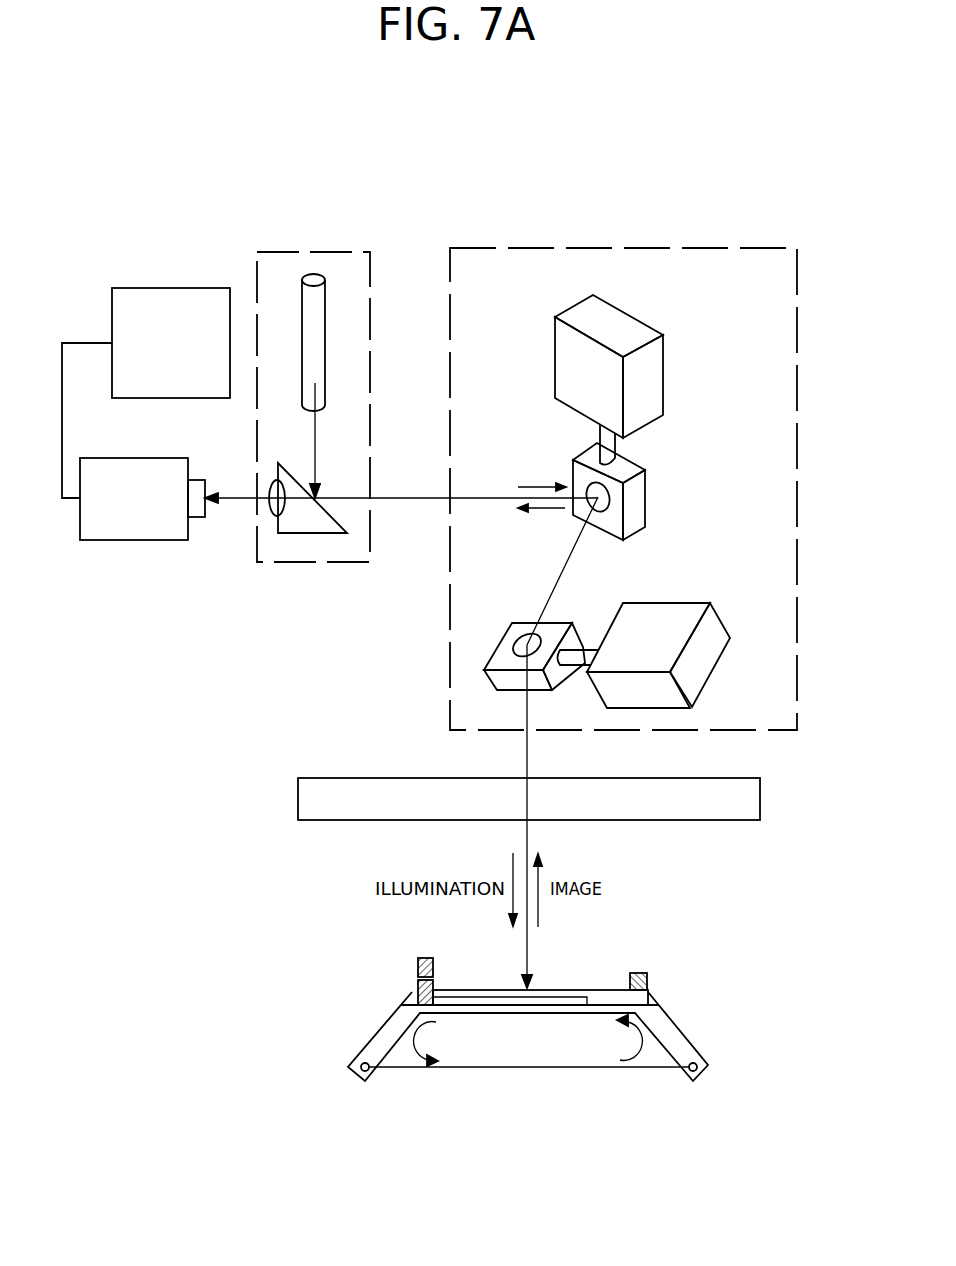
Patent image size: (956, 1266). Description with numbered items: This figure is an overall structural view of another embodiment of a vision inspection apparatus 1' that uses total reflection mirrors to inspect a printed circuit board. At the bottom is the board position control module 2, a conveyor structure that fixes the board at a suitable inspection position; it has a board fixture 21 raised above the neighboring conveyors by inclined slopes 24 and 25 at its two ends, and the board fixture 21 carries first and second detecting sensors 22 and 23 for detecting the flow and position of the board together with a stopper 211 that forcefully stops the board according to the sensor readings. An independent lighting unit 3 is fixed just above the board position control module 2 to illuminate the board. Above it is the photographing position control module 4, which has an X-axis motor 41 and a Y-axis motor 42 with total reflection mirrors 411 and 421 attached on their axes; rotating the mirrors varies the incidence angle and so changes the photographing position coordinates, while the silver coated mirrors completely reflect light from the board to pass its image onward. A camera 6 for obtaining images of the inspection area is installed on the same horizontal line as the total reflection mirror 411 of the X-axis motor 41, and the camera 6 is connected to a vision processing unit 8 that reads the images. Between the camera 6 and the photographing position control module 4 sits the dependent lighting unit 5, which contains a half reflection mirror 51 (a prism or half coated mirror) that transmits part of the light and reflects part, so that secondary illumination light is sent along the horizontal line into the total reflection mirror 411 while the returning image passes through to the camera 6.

The vision inspection apparatus 1' is at (114, 190).
The vision processing unit 8 is at (174, 295).
The camera 6 is at (118, 530).
The dependent lighting unit 5 is at (370, 297).
The half reflection mirror 51 is at (297, 525).
The photographing position control module 4 is at (797, 297).
The X-axis motor 41 is at (660, 360).
The total reflection mirror 411 is at (647, 497).
The Y-axis motor 42 is at (668, 607).
The total reflection mirror 421 is at (560, 625).
The independent lighting unit 3 is at (760, 797).
The board position control module 2 is at (678, 942).
The second detecting sensor 23 is at (422, 958).
The stopper 211 is at (417, 987).
The board fixture 21 is at (595, 990).
The first detecting sensor 22 is at (650, 982).
The inclined slope 25 is at (380, 1030).
The inclined slope 24 is at (683, 1028).